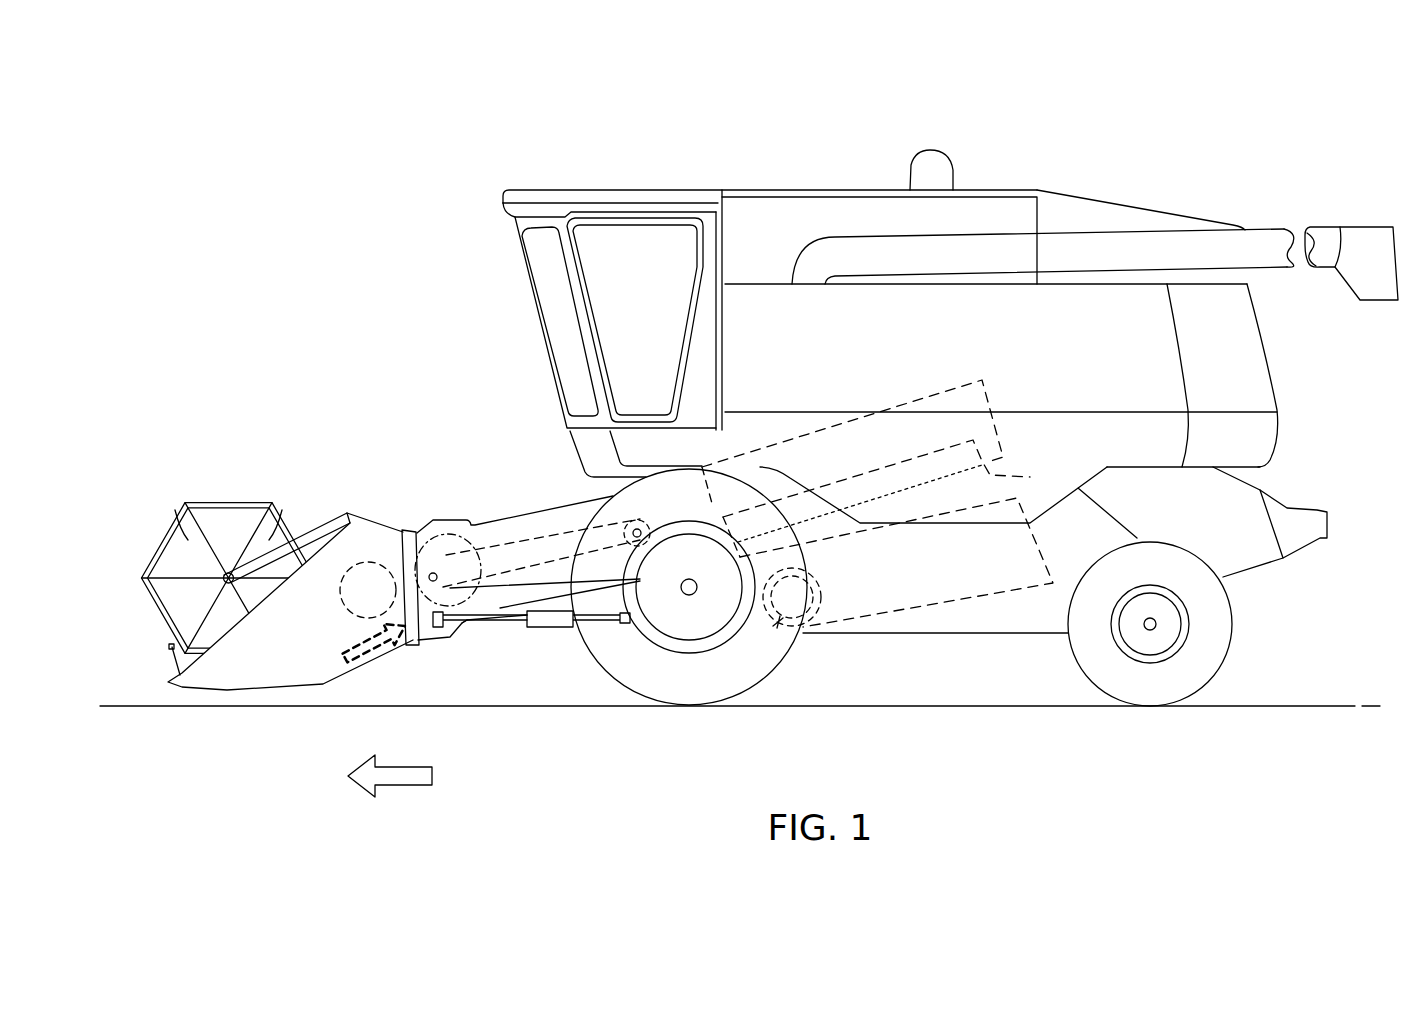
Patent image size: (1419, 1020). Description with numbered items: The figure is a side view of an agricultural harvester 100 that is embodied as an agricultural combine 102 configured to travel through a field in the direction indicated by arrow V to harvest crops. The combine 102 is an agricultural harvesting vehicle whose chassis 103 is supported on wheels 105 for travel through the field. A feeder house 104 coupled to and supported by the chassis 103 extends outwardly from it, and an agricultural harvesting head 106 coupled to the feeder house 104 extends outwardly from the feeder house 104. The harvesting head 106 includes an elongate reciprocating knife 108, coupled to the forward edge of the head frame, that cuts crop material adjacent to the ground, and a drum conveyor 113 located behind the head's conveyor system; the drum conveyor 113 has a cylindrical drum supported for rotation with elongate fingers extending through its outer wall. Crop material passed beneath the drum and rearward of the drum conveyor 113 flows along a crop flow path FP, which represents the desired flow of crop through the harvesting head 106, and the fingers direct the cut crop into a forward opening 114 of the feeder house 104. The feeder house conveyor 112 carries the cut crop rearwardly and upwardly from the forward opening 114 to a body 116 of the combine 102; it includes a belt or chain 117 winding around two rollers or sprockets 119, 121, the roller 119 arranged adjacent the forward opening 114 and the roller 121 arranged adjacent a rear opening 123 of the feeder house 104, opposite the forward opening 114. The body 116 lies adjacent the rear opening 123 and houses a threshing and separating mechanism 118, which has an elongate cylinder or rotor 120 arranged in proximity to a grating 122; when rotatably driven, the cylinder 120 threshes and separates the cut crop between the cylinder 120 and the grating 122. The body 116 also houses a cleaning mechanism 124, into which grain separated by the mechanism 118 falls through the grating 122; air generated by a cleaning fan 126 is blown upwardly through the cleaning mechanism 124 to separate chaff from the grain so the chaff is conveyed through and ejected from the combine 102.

The agricultural harvester 100 is at (355, 166).
The agricultural combine 102 is at (790, 188).
The chassis 103 is at (953, 633).
The feeder house 104 is at (533, 513).
The wheels 105 is at (767, 683).
The agricultural harvesting head 106 is at (206, 488).
The elongate reciprocating knife 108 is at (180, 688).
The feeder house conveyor 112 is at (557, 537).
The drum conveyor 113 is at (341, 601).
The forward opening 114 is at (417, 587).
The body 116 is at (722, 450).
The belt or chain 117 is at (549, 613).
The threshing and separating mechanism 118 is at (842, 416).
The roller or sprocket 119 is at (477, 620).
The elongate cylinder or rotor 120 is at (946, 386).
The roller or sprocket 121 is at (645, 541).
The grating 122 is at (1030, 477).
The rear opening 123 is at (687, 528).
The cleaning mechanism 124 is at (808, 639).
The cleaning fan 126 is at (787, 620).
The crop flow path FP is at (368, 660).
The direction of travel arrow V is at (390, 765).